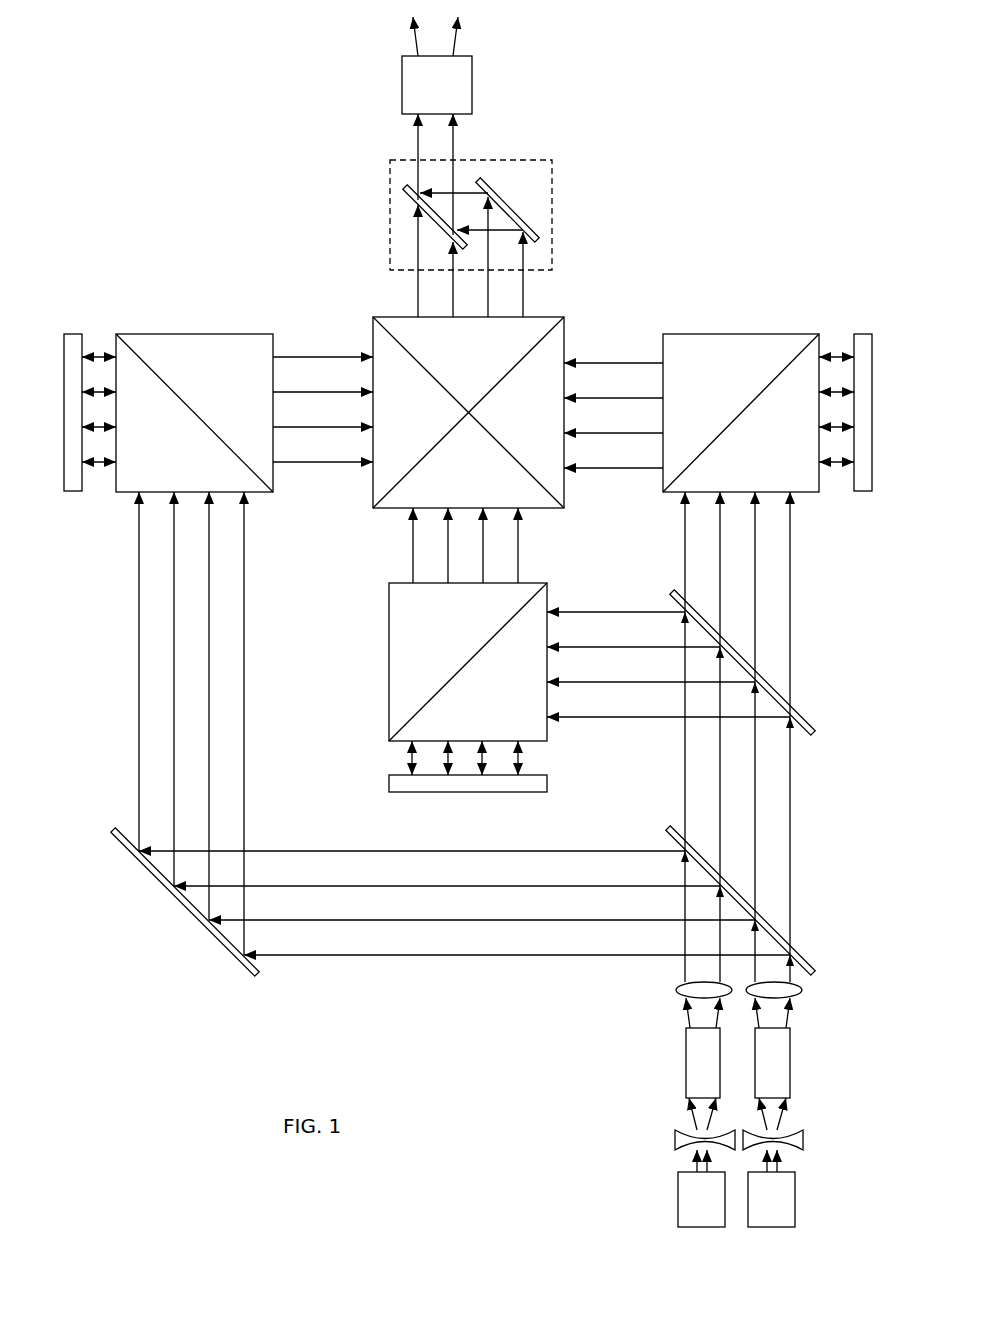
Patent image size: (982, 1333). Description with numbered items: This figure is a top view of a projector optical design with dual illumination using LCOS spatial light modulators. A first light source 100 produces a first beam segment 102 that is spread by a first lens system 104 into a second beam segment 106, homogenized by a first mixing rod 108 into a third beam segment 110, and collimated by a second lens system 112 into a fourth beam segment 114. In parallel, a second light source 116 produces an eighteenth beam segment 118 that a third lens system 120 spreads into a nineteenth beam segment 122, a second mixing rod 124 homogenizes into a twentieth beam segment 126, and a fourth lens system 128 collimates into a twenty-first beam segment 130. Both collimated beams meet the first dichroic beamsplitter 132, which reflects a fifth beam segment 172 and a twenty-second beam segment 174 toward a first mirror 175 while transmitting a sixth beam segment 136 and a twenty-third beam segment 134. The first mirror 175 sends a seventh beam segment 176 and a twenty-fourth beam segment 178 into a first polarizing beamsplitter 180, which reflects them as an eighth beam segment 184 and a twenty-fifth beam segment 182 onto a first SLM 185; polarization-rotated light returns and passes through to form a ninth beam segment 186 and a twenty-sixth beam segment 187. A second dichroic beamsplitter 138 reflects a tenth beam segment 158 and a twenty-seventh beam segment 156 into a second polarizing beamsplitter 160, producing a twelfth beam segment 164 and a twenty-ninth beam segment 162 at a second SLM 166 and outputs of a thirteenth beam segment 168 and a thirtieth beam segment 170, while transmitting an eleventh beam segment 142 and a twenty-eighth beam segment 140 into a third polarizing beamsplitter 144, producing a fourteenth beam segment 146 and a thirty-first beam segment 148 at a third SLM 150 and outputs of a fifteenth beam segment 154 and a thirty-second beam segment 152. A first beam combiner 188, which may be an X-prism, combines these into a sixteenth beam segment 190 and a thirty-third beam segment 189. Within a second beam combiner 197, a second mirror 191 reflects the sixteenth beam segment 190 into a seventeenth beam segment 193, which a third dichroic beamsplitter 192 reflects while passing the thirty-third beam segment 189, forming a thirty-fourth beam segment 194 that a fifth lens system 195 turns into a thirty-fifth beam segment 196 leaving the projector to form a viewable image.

The first light source 100 is at (678, 1212).
The first beam segment 102 is at (697, 1160).
The first lens system 104 is at (675, 1140).
The second beam segment 106 is at (688, 1115).
The first mixing rod 108 is at (686, 1060).
The third beam segment 110 is at (687, 1020).
The second lens system 112 is at (676, 993).
The fourth beam segment 114 is at (685, 983).
The second light source 116 is at (795, 1205).
The eighteenth beam segment 118 is at (780, 1162).
The third lens system 120 is at (803, 1143).
The nineteenth beam segment 122 is at (783, 1122).
The second mixing rod 124 is at (790, 1050).
The twentieth beam segment 126 is at (790, 1015).
The fourth lens system 128 is at (803, 987).
The twenty-first beam segment 130 is at (815, 975).
The first dichroic beamsplitter 132 is at (807, 953).
The twenty-third beam segment 134 is at (790, 838).
The sixth beam segment 136 is at (686, 792).
The second dichroic beamsplitter 138 is at (813, 738).
The twenty-eighth beam segment 140 is at (790, 642).
The eleventh beam segment 142 is at (686, 515).
The third polarizing beamsplitter 144 is at (740, 334).
The fourteenth beam segment 146 is at (833, 468).
The thirty-first beam segment 148 is at (833, 355).
The third SLM 150 is at (862, 334).
The thirty-second beam segment 152 is at (628, 360).
The fifteenth beam segment 154 is at (650, 468).
The twenty-seventh beam segment 156 is at (660, 717).
The tenth beam segment 158 is at (655, 612).
The second polarizing beamsplitter 160 is at (389, 662).
The twenty-ninth beam segment 162 is at (393, 757).
The twelfth beam segment 164 is at (520, 757).
The second SLM 166 is at (389, 785).
The thirteenth beam segment 168 is at (520, 572).
The thirtieth beam segment 170 is at (413, 575).
The fifth beam segment 172 is at (388, 850).
The twenty-second beam segment 174 is at (395, 955).
The first mirror 175 is at (180, 904).
The seventh beam segment 176 is at (139, 680).
The twenty-fourth beam segment 178 is at (244, 640).
The first polarizing beamsplitter 180 is at (157, 334).
The twenty-fifth beam segment 182 is at (97, 465).
The eighth beam segment 184 is at (97, 355).
The first SLM 185 is at (73, 334).
The ninth beam segment 186 is at (290, 357).
The twenty-sixth beam segment 187 is at (296, 462).
The first beam combiner 188 is at (378, 508).
The thirty-third beam segment 189 is at (418, 283).
The sixteenth beam segment 190 is at (523, 300).
The second mirror 191 is at (507, 200).
The third dichroic beamsplitter 192 is at (405, 192).
The seventeenth beam segment 193 is at (462, 192).
The thirty-fourth beam segment 194 is at (415, 132).
The fifth lens system 195 is at (402, 85).
The thirty-fifth beam segment 196 is at (413, 38).
The second beam combiner 197 is at (553, 212).